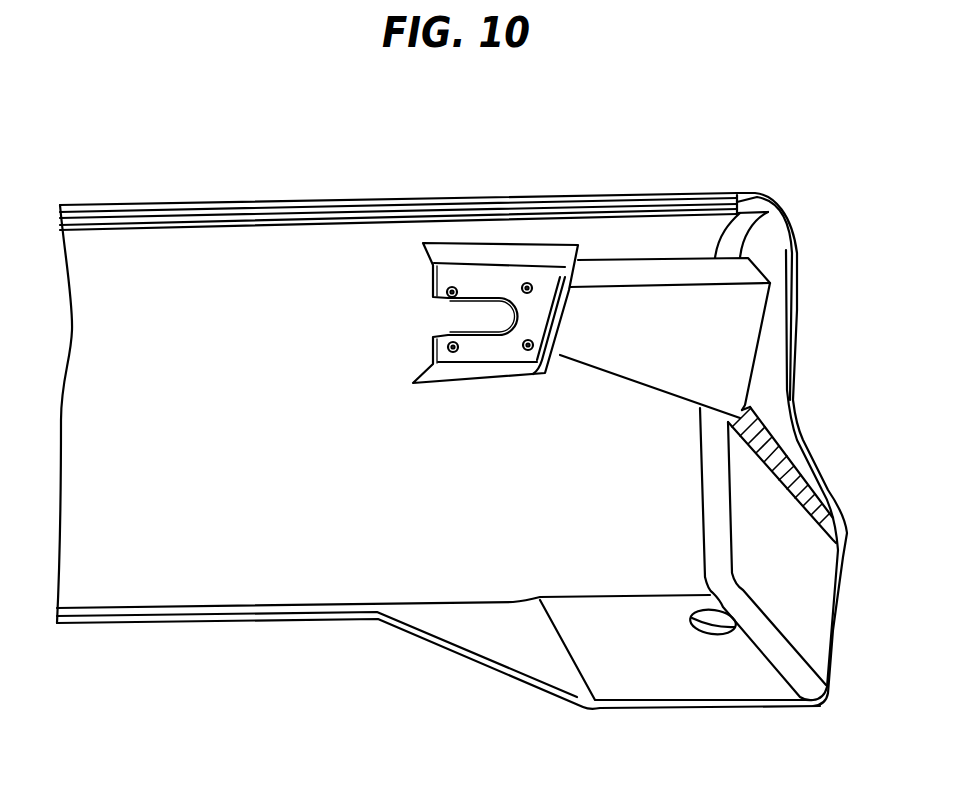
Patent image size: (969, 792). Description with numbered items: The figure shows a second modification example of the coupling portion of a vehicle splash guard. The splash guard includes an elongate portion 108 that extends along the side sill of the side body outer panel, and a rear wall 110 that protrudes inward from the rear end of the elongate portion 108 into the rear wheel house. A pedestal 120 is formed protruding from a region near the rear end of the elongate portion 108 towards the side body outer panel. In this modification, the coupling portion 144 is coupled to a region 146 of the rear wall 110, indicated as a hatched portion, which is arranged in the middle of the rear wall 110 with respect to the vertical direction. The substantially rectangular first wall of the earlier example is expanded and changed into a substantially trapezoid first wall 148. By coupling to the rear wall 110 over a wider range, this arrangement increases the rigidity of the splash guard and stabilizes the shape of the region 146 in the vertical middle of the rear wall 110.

The elongate portion 108 is at (148, 258).
The rear wall 110 is at (810, 592).
The pedestal 120 is at (520, 257).
The coupling portion 144 is at (633, 383).
The region 146 is at (767, 443).
The first wall 148 is at (738, 333).